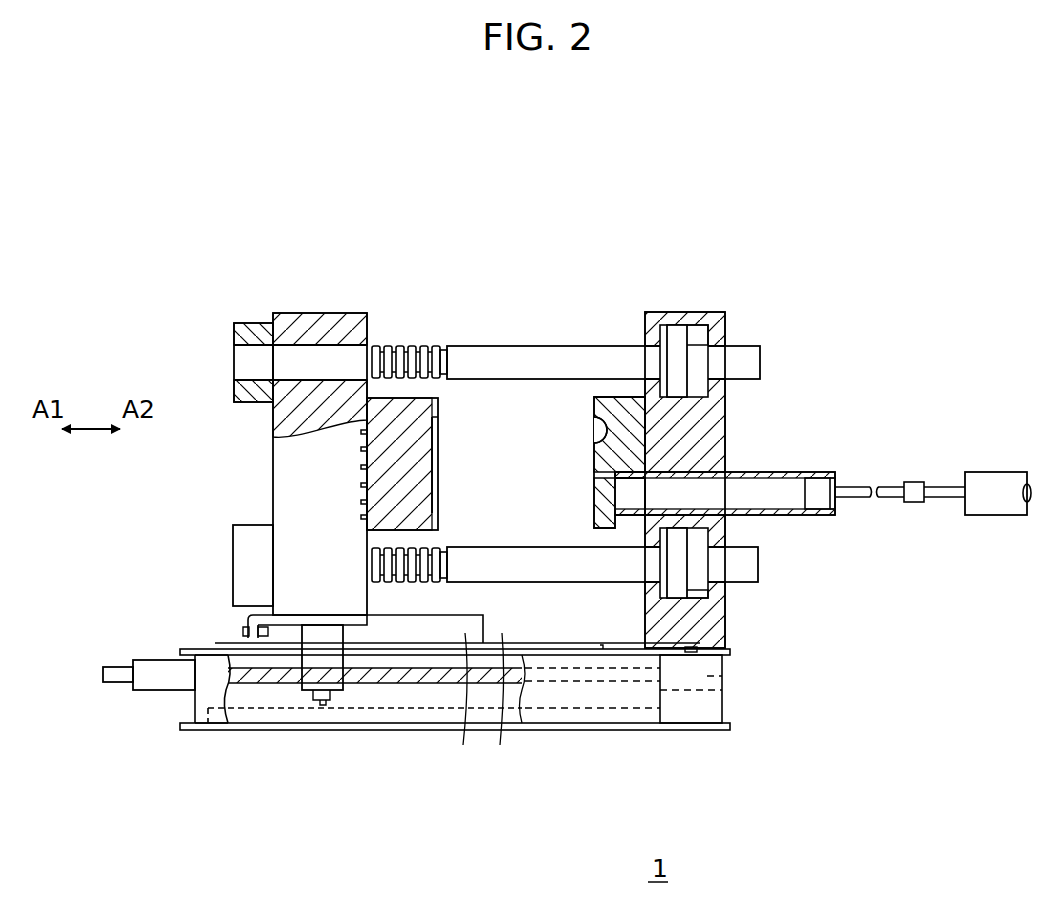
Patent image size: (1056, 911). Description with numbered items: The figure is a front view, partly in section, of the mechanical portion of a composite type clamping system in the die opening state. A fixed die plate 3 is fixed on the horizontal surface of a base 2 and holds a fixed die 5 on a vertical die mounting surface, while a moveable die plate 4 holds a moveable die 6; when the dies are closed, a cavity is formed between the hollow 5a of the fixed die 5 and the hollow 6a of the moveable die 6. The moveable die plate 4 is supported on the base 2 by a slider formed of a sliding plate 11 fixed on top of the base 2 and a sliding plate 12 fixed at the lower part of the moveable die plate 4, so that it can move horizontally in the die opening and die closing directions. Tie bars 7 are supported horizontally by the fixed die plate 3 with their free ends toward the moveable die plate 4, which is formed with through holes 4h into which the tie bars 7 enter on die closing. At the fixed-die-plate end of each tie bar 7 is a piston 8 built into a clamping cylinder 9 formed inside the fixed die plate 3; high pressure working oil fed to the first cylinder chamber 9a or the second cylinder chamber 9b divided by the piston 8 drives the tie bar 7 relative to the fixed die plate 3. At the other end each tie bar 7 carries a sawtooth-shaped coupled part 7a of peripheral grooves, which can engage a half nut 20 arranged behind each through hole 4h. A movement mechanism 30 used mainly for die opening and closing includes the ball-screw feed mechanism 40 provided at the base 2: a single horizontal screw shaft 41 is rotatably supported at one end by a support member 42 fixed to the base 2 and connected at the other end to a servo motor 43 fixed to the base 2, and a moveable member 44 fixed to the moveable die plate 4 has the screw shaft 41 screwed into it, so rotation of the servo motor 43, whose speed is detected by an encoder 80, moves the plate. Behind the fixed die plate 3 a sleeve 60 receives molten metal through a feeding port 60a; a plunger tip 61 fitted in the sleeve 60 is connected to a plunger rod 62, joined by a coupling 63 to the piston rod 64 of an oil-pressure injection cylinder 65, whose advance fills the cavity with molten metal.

The base 2 is at (632, 712).
The fixed die plate 3 is at (715, 413).
The moveable die plate 4 is at (285, 490).
The through holes 4h is at (321, 360).
The fixed die 5 is at (620, 405).
The hollow 5a is at (598, 428).
The moveable die 6 is at (395, 418).
The hollow 6a is at (438, 430).
The tie bars 7 is at (520, 360).
The coupled part 7a is at (420, 347).
The piston 8 is at (672, 335).
The clamping cylinder 9 is at (720, 300).
The first cylinder chamber 9a is at (688, 650).
The second cylinder chamber 9b is at (700, 600).
The sliding plate 11 is at (500, 646).
The sliding plate 12 is at (470, 633).
The half nuts 20 is at (256, 325).
The movement mechanism 30 is at (745, 735).
The ball-screw feed mechanism 40 is at (360, 696).
The screw shaft 41 is at (225, 662).
The support member 42 is at (730, 680).
The servo motor 43 is at (145, 676).
The moveable member 44 is at (310, 665).
The sleeve 60 is at (775, 516).
The feeding port 60a is at (808, 476).
The plunger tip 61 is at (828, 470).
The plunger rod 62 is at (892, 481).
The coupling 63 is at (913, 503).
The piston rod 64 is at (947, 481).
The injection cylinder 65 is at (1005, 505).
The encoder 80 is at (122, 670).